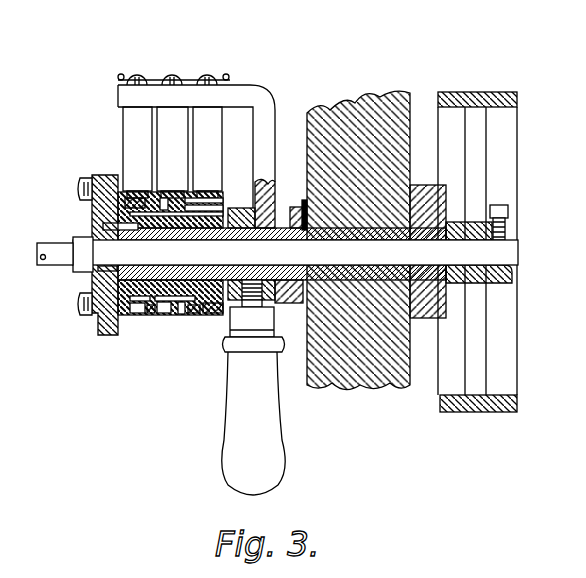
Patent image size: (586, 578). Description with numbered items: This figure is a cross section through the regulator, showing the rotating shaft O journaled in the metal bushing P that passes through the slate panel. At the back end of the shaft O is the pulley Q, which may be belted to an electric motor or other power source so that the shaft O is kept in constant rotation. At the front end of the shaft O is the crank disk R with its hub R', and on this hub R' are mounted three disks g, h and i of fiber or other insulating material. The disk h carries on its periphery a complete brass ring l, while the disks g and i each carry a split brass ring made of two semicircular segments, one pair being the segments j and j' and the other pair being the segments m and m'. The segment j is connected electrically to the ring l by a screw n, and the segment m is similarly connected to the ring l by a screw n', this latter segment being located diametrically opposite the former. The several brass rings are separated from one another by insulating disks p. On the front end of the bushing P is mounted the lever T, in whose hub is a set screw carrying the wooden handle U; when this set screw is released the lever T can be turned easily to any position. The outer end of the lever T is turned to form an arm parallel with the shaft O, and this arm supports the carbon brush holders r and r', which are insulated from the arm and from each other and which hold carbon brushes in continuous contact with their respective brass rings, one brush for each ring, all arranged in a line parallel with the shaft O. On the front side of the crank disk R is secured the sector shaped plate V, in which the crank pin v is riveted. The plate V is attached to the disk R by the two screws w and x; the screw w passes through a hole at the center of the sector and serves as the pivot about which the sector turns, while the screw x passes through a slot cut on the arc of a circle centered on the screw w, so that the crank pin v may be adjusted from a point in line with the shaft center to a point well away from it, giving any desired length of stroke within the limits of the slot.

The body/frame B is at (372, 93).
The pulley Q is at (512, 187).
The shaft O is at (520, 253).
The lever T is at (273, 94).
The carbon brush holder r is at (127, 152).
The carbon brush holder r' is at (187, 152).
The brass segment j' is at (135, 184).
The brass ring l is at (167, 197).
The brass segment m' is at (221, 176).
The screw n' is at (220, 189).
The hub R' is at (241, 207).
The crank disk R is at (97, 272).
The screw x is at (80, 183).
The screw w is at (80, 303).
The crank pin v is at (57, 248).
The sector shaped plate V is at (98, 273).
The insulating disk g is at (137, 313).
The brass segment j is at (146, 327).
The insulating disk h is at (170, 313).
The insulating disk i is at (200, 313).
The brass segment m is at (213, 321).
The screw n is at (134, 333).
The insulating disk p is at (163, 317).
The metal bushing P is at (337, 280).
The wooden handle U is at (277, 415).